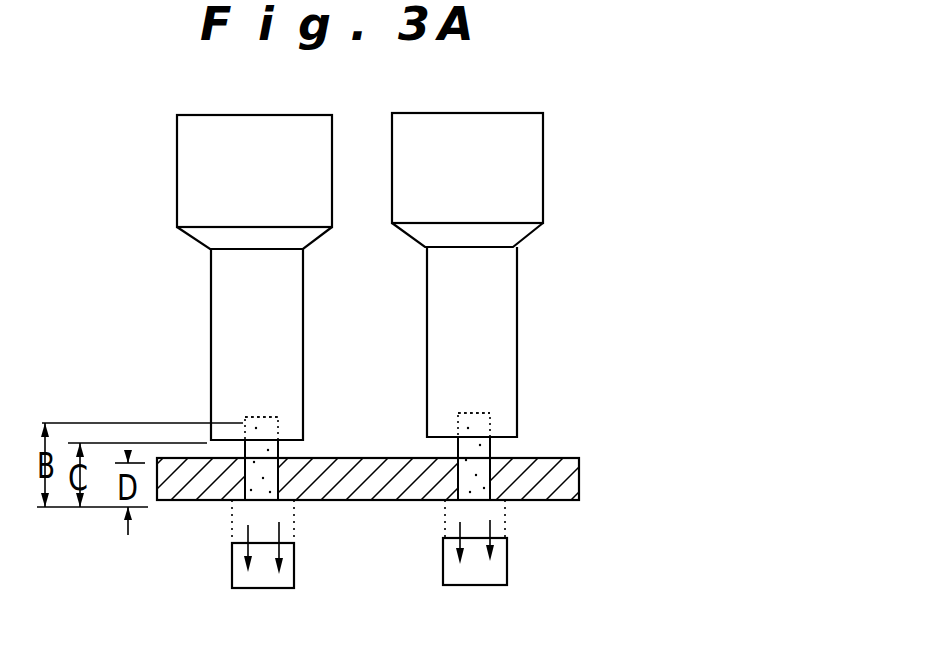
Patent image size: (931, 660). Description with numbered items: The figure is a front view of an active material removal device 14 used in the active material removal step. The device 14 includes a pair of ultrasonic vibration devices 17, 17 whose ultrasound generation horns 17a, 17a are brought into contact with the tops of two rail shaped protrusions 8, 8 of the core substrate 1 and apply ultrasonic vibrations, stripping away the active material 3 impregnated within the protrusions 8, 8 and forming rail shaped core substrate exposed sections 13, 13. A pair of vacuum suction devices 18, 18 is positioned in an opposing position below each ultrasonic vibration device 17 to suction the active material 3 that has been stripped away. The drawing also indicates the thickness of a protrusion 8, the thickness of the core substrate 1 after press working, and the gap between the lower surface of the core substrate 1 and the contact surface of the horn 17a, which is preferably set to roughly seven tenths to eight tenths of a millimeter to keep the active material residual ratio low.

The ultrasonic vibration device 17 is at (178, 213).
The ultrasound generation horn 17a is at (288, 408).
The active material removal device 14 is at (547, 325).
The protrusion 8 is at (260, 417).
The core substrate exposed section 13 is at (262, 452).
The active material 3 is at (395, 492).
The core substrate 1 is at (558, 500).
The vacuum suction device 18 is at (232, 562).